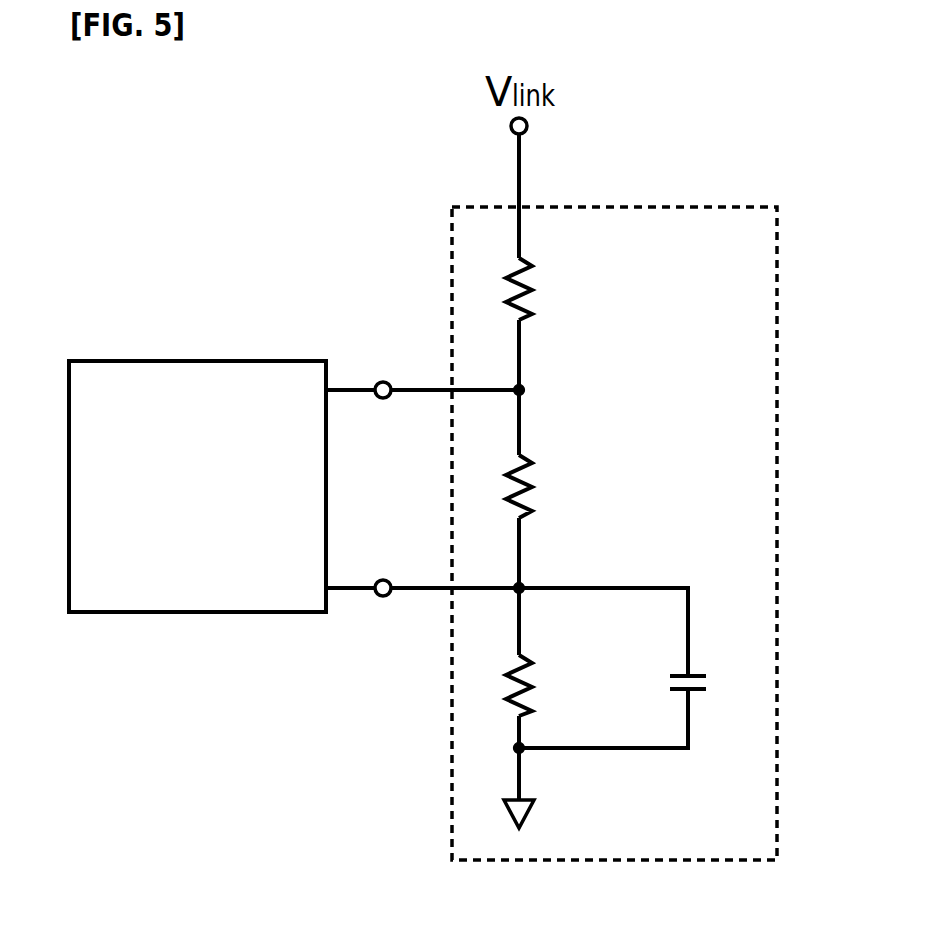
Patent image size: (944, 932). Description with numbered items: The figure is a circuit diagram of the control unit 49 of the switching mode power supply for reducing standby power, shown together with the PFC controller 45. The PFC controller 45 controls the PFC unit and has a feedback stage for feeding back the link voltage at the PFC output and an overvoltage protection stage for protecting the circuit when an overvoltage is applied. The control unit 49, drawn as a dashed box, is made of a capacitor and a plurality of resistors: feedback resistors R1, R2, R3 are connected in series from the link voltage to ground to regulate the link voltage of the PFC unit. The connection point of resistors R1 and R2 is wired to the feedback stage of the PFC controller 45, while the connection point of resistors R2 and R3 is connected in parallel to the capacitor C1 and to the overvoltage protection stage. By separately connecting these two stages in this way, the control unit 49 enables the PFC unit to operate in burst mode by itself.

The PFC controller 45 is at (200, 360).
The control unit 49 is at (677, 497).
The feedback resistor R1 is at (542, 289).
The feedback resistor R2 is at (543, 486).
The feedback resistor R3 is at (543, 685).
The capacitor C1 is at (713, 683).